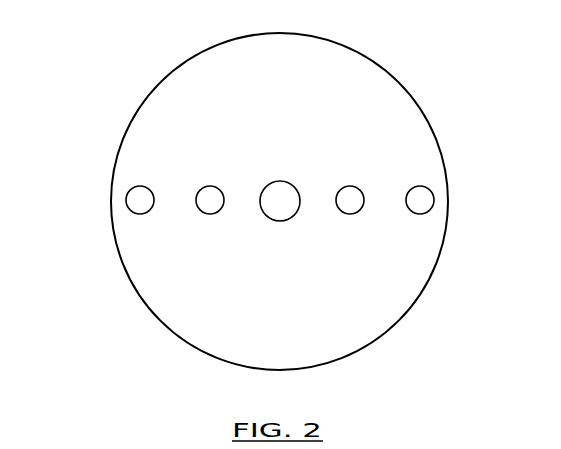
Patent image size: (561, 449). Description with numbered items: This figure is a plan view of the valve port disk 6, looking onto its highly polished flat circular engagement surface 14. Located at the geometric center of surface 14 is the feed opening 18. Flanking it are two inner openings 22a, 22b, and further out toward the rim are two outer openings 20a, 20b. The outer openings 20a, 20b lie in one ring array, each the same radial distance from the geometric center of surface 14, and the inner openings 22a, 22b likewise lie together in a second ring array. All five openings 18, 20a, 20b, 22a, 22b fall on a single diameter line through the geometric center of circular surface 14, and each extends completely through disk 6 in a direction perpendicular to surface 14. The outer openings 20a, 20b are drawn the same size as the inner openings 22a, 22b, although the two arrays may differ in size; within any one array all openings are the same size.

The valve port disk 6 is at (256, 200).
The flat circular engagement surface 14 is at (279, 186).
The feed opening 18 is at (260, 177).
The outer opening 20a is at (93, 176).
The outer opening 20b is at (466, 167).
The inner opening 22a is at (215, 231).
The inner opening 22b is at (357, 231).